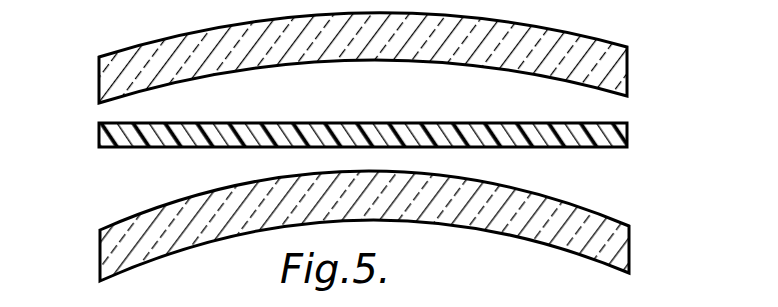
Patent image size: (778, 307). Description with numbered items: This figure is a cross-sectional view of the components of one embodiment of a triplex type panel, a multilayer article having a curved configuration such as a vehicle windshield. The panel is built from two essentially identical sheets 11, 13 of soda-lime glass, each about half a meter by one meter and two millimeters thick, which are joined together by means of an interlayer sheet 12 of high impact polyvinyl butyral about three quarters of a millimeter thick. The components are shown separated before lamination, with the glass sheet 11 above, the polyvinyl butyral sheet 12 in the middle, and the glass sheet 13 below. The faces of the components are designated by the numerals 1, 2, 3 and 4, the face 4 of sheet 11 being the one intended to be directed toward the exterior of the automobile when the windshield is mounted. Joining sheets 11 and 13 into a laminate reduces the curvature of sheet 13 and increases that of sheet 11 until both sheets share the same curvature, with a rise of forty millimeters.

The face 1 is at (548, 247).
The face 2 is at (572, 202).
The face 3 is at (572, 82).
The face 4 is at (567, 33).
The sheet 11 is at (153, 66).
The sheet of high impact polyvinyl butyral 12 is at (133, 133).
The sheet 13 is at (157, 240).